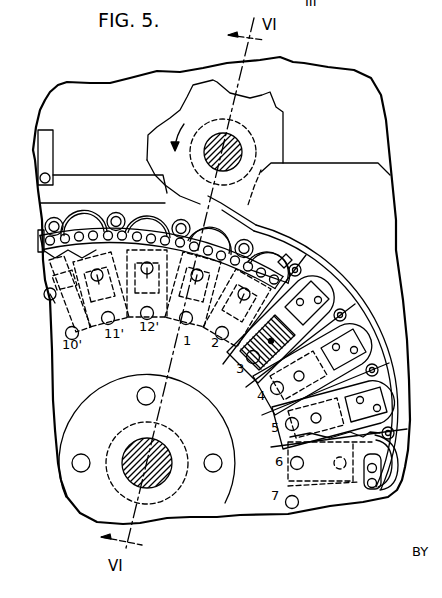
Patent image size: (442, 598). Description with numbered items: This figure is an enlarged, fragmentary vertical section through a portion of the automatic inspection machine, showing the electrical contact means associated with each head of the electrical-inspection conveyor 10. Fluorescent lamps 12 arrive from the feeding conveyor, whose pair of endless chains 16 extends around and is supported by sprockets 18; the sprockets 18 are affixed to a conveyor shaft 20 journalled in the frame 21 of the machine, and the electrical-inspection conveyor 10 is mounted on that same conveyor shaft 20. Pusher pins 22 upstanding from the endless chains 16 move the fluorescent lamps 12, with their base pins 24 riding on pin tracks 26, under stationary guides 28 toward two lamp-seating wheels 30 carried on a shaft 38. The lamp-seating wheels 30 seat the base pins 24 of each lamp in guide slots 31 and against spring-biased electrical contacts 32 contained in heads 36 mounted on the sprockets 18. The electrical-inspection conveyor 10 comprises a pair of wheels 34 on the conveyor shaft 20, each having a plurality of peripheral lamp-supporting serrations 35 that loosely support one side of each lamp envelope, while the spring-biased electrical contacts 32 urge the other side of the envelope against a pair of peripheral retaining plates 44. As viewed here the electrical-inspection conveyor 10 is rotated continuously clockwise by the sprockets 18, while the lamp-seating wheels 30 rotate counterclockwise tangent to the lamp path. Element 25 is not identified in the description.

The electrical-inspection conveyor 10 is at (52, 428).
The fluorescent lamps 12 is at (181, 221).
The endless chains 16 is at (262, 226).
The sprockets 18 is at (48, 252).
The conveyor shaft 20 is at (167, 483).
The frame 21 is at (376, 137).
The pusher pins 22 is at (60, 214).
The base pins 24 is at (92, 225).
The stop 25 is at (420, 420).
The pin tracks 26 is at (50, 233).
The stationary guides 28 is at (133, 174).
The lamp-seating wheels 30 is at (273, 103).
The guide slots 31 is at (297, 318).
The spring-biased electrical contacts 32 is at (362, 405).
The wheels 34 is at (284, 262).
The peripheral lamp-supporting serrations 35 is at (330, 308).
The heads 36 is at (237, 417).
The shaft 38 is at (280, 147).
The peripheral retaining plates 44 is at (284, 240).